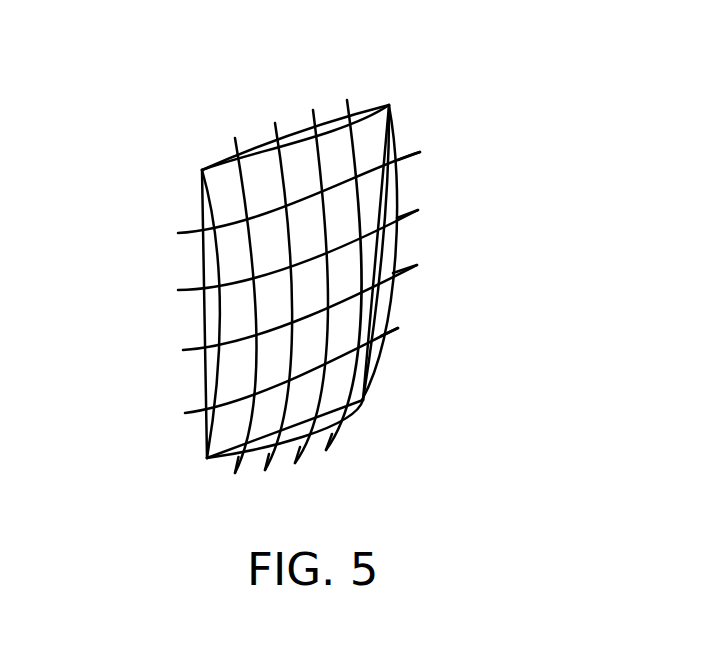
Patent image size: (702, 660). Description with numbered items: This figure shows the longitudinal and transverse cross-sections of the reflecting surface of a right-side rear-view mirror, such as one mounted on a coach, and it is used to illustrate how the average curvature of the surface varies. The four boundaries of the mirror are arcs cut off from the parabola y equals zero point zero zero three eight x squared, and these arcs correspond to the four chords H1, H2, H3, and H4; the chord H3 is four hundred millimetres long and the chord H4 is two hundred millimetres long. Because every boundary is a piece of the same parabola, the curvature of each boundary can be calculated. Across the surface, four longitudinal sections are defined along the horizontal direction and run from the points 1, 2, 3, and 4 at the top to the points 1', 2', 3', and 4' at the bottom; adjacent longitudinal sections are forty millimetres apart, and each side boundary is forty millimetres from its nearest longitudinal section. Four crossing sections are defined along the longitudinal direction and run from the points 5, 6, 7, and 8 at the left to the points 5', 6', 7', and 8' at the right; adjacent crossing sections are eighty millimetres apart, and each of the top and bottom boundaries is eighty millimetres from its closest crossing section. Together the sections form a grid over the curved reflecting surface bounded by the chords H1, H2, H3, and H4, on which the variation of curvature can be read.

The longitudinal section 1 is at (241, 289).
The longitudinal section 2 is at (278, 283).
The longitudinal section 3 is at (311, 274).
The longitudinal section 4 is at (344, 260).
The crossing section 5 is at (289, 198).
The crossing section 6 is at (288, 256).
The crossing section 7 is at (289, 313).
The crossing section 8 is at (279, 376).
The longitudinal section 1' is at (240, 481).
The longitudinal section 2' is at (267, 479).
The longitudinal section 3' is at (300, 473).
The longitudinal section 4' is at (335, 449).
The crossing section 5' is at (420, 153).
The crossing section 6' is at (420, 212).
The crossing section 7' is at (418, 265).
The crossing section 8' is at (404, 323).
The chord H1 is at (205, 330).
The chord H2 is at (333, 428).
The chord H3 is at (398, 253).
The chord H4 is at (298, 133).